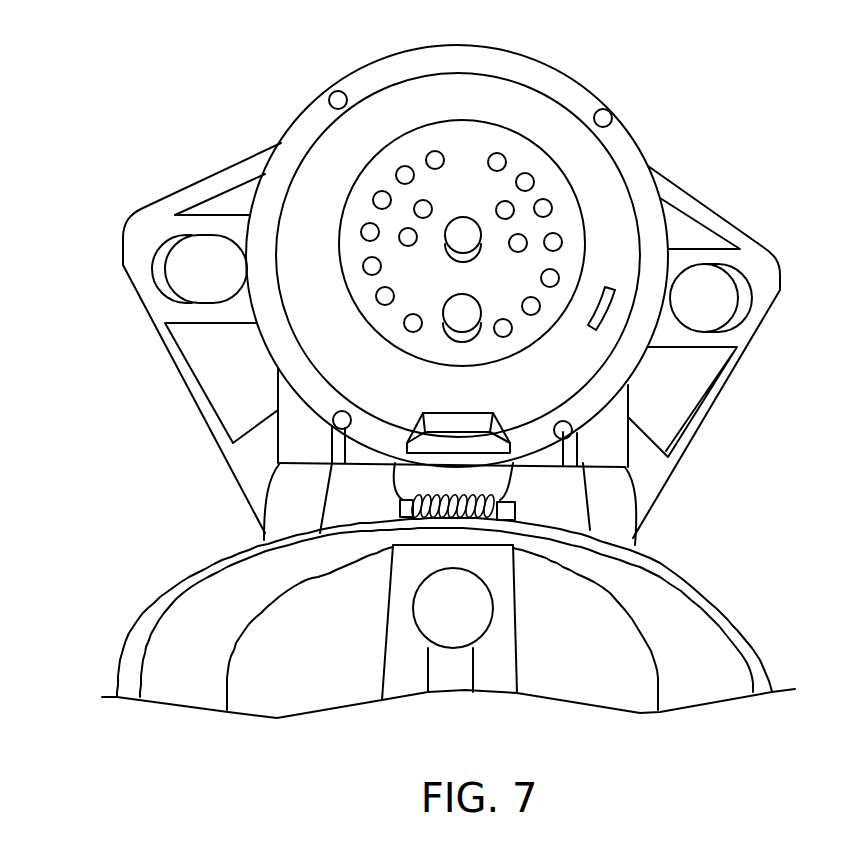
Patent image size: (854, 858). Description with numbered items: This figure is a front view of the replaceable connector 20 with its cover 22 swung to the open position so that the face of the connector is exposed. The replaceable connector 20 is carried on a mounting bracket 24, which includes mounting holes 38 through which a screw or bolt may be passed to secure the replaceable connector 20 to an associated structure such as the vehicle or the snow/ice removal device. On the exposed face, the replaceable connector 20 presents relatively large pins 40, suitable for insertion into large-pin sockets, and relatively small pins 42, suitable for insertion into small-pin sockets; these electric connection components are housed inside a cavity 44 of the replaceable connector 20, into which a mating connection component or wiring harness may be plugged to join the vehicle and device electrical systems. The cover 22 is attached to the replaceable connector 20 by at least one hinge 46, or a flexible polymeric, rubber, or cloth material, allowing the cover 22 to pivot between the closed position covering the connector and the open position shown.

The replaceable connector 20 is at (668, 87).
The cover 22 is at (448, 649).
The mounting bracket 24 is at (447, 309).
The mounting holes 38 is at (157, 231).
The large pins 40 is at (354, 147).
The small pins 42 is at (501, 185).
The cavity 44 is at (690, 364).
The hinge 46 is at (303, 485).